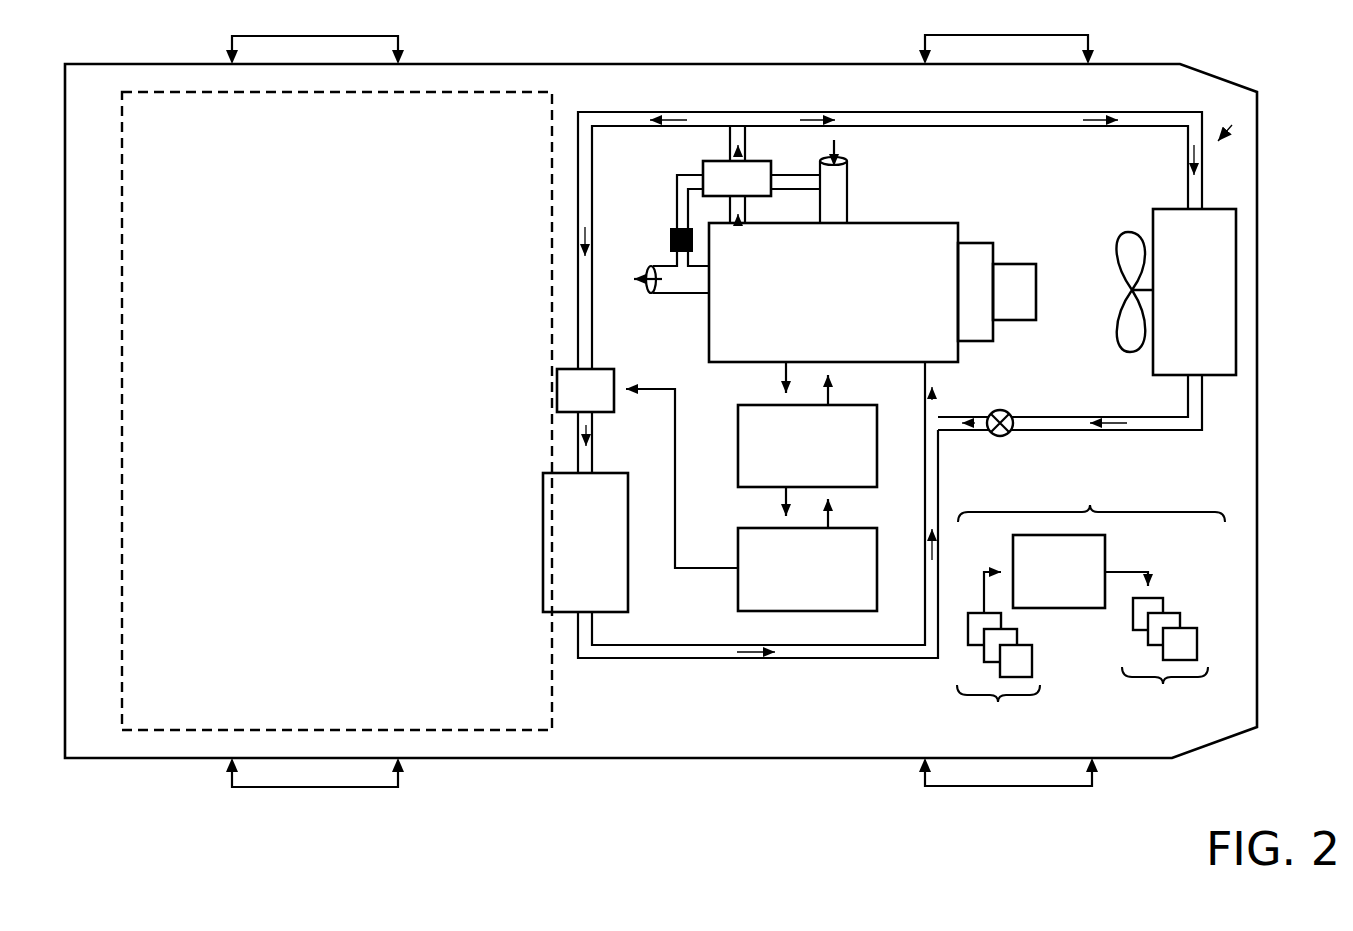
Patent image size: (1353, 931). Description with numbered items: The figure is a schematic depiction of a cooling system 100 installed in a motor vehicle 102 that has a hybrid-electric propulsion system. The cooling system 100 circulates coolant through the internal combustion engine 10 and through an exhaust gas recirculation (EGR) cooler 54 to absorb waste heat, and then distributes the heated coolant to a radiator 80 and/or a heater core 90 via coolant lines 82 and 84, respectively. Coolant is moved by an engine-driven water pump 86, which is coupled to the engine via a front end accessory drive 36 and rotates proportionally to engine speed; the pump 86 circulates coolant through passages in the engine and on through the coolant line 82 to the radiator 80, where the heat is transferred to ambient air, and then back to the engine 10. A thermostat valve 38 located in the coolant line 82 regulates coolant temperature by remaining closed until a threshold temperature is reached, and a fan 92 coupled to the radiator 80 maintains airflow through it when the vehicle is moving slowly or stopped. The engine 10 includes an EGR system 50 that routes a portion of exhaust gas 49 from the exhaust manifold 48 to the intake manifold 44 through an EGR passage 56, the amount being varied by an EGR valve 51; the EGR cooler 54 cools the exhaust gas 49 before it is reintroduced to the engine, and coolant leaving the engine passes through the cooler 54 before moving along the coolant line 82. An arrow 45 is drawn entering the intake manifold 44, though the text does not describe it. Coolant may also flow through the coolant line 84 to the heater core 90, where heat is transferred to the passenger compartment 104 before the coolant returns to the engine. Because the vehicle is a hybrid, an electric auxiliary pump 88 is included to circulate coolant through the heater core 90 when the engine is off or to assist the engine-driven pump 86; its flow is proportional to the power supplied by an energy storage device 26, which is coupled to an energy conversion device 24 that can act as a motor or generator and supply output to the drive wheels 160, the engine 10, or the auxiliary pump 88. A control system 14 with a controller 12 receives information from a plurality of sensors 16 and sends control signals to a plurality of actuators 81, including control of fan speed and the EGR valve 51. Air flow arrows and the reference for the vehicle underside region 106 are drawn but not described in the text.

The internal combustion engine 10 is at (918, 261).
The controller 12 is at (1046, 584).
The control system 14 is at (1091, 488).
The sensors 16 is at (999, 660).
The energy conversion device 24 is at (793, 457).
The energy storage device 26 is at (793, 582).
The front end accessory drive 36 is at (990, 243).
The thermostat valve 38 is at (1010, 412).
The intake manifold 44 is at (848, 178).
The intake air flow 45 is at (838, 152).
The exhaust manifold 48 is at (685, 293).
The exhaust gas 49 is at (642, 284).
The exhaust gas recirculation system 50 is at (652, 174).
The EGR valve 51 is at (670, 238).
The EGR cooler 54 is at (723, 191).
The EGR passage 56 is at (780, 173).
The radiator 80 is at (1182, 304).
The actuators 81 is at (1165, 651).
The coolant line 82 is at (1012, 112).
The coolant line 84 is at (660, 112).
The engine-driven water pump 86 is at (1001, 304).
The electric auxiliary pump 88 is at (571, 402).
The heater core 90 is at (572, 555).
The fan 92 is at (1117, 256).
The cooling system 100 is at (1235, 120).
The motor vehicle 102 is at (590, 63).
The passenger compartment 104 is at (271, 455).
The vehicle bottom air flow 106 is at (318, 788).
The drive wheels 160 is at (313, 35).